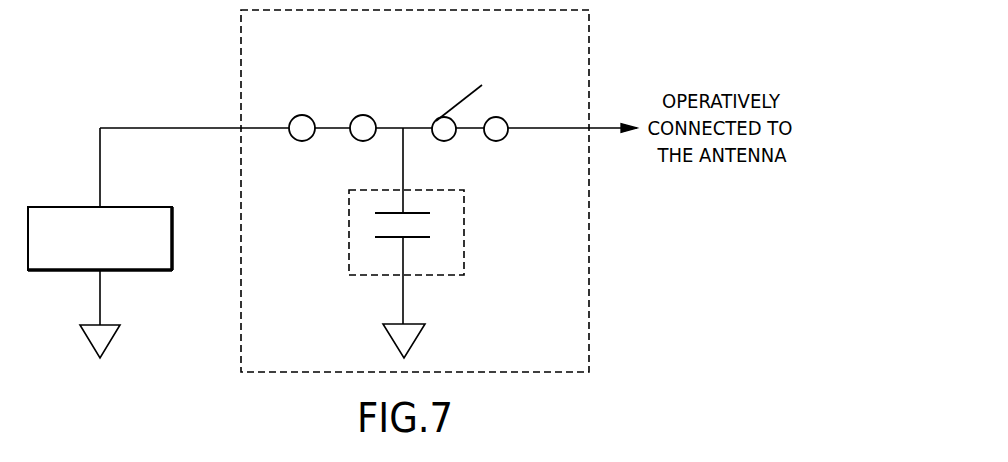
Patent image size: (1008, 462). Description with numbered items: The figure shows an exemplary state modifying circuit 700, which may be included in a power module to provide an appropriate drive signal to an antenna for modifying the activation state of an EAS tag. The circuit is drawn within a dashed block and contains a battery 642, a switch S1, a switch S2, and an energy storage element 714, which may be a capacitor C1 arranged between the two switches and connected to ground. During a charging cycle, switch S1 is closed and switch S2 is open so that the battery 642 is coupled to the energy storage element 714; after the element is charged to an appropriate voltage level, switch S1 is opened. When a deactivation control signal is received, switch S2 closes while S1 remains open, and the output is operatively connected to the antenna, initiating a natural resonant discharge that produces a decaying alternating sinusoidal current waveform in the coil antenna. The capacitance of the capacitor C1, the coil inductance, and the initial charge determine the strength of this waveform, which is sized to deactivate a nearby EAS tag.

The state modifying circuit 700 is at (589, 263).
The energy storage element 714 is at (443, 243).
The battery 642 is at (145, 271).
The switch S1 is at (332, 103).
The switch S2 is at (473, 109).
The capacitor C1 is at (407, 226).